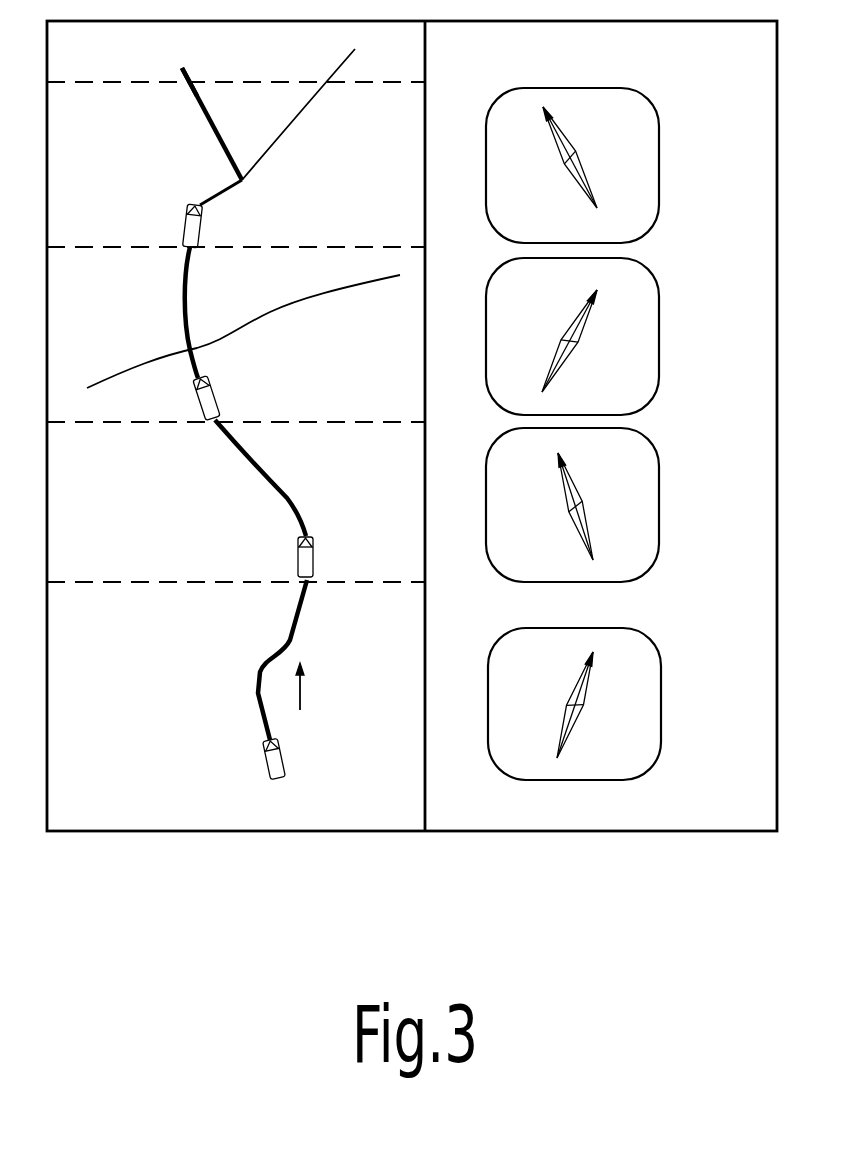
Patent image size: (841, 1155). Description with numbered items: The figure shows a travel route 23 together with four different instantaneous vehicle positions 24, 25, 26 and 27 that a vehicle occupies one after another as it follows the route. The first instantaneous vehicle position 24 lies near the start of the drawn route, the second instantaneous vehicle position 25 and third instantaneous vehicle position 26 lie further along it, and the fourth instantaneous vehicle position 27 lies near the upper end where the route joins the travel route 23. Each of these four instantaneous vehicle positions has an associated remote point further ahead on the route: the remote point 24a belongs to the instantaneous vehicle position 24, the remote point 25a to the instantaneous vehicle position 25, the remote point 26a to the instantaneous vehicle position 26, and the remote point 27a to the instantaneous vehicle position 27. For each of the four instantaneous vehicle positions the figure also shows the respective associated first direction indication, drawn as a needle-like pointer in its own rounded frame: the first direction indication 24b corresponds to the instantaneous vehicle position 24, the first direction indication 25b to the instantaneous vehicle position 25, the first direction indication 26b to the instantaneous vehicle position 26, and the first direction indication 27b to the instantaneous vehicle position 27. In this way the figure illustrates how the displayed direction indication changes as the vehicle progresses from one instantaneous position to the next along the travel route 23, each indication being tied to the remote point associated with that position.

The travel route 23 is at (209, 117).
The instantaneous vehicle position 24 is at (267, 740).
The remote point 24a is at (310, 582).
The first direction indication 24b is at (663, 743).
The instantaneous vehicle position 25 is at (307, 535).
The remote point 25a is at (217, 422).
The first direction indication 25b is at (662, 538).
The instantaneous vehicle position 26 is at (201, 378).
The remote point 26a is at (190, 249).
The first direction indication 26b is at (658, 378).
The instantaneous vehicle position 27 is at (200, 205).
The remote point 27a is at (189, 86).
The first direction indication 27b is at (660, 202).